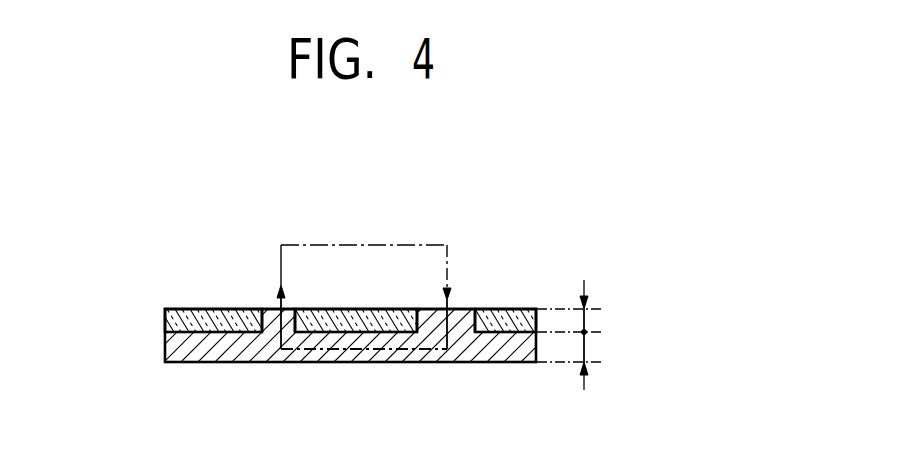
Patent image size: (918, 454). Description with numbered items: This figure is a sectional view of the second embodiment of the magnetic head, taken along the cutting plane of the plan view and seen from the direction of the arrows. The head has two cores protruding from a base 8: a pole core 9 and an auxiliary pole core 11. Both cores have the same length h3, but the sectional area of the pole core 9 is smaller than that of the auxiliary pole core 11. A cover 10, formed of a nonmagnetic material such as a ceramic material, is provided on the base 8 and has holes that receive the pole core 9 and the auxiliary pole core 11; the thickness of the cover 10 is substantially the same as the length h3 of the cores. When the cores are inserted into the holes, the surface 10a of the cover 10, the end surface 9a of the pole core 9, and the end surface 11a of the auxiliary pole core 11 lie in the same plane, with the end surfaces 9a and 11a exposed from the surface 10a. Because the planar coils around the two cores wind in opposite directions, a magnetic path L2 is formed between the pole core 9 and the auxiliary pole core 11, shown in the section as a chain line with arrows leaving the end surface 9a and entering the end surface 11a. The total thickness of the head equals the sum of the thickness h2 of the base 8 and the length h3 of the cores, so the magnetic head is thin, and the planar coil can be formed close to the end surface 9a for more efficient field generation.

The base 8 is at (495, 363).
The pole core 9 is at (268, 308).
The end surface of the pole core 9a is at (296, 308).
The cover 10 is at (518, 308).
The surface of the cover 10a is at (183, 308).
The auxiliary pole core 11 is at (460, 308).
The end surface of the auxiliary pole core 11a is at (431, 308).
The magnetic path L2 is at (365, 245).
The thickness of the base h2 is at (586, 346).
The length of the pole core and auxiliary pole core h3 is at (586, 314).